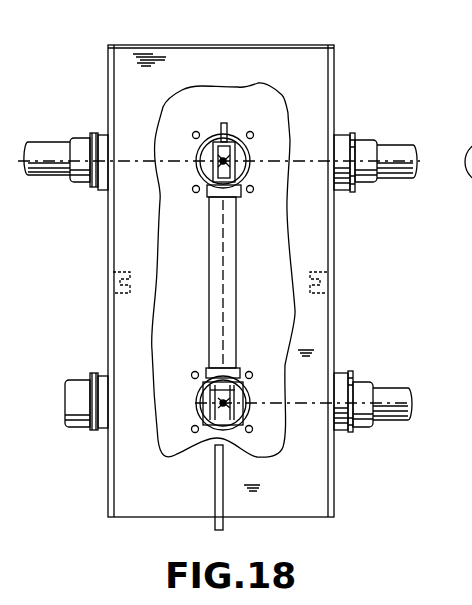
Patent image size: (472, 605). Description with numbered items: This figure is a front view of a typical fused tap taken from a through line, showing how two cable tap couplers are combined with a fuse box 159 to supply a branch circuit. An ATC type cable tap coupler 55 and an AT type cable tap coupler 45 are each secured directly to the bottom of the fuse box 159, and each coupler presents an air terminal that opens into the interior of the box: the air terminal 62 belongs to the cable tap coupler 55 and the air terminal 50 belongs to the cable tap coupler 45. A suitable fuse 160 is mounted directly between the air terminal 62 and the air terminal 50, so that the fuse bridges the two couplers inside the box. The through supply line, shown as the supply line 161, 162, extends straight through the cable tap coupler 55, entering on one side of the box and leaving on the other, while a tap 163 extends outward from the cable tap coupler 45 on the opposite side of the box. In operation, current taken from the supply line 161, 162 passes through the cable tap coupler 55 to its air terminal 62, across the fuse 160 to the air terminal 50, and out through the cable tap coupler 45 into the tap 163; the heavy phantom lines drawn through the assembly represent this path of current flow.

The fuse box 159 is at (336, 65).
The supply line 161 is at (50, 142).
The cable tap coupler 55 is at (354, 128).
The supply line 162 is at (402, 146).
The air terminal 62 is at (232, 166).
The fuse 160 is at (236, 268).
The cable tap coupler 45 is at (350, 371).
The air terminal 50 is at (247, 412).
The tap 163 is at (389, 420).